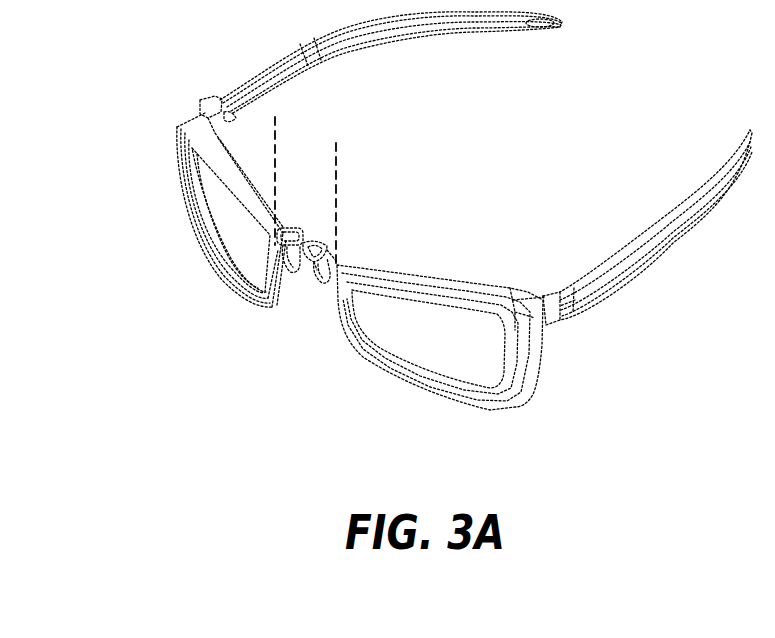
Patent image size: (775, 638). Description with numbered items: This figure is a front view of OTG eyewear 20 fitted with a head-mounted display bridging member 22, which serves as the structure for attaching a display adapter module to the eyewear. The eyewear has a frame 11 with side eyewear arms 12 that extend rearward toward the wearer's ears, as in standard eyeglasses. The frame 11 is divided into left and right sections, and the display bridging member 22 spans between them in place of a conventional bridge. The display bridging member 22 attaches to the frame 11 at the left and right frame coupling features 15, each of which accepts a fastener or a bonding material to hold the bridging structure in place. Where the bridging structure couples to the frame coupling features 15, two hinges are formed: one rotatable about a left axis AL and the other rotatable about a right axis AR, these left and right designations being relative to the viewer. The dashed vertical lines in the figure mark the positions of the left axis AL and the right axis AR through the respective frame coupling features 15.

The frame 11 is at (538, 370).
The eyewear arm 12 is at (440, 33).
The frame coupling feature 15 is at (283, 225).
The OTG eyewear 20 is at (643, 104).
The display bridging member 22 is at (297, 258).
The right axis AR is at (275, 133).
The left axis AL is at (336, 183).